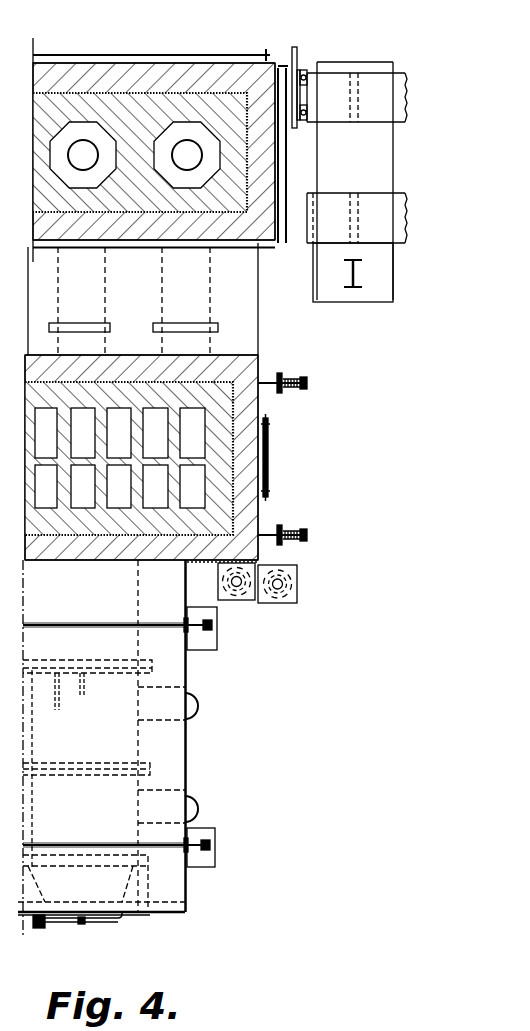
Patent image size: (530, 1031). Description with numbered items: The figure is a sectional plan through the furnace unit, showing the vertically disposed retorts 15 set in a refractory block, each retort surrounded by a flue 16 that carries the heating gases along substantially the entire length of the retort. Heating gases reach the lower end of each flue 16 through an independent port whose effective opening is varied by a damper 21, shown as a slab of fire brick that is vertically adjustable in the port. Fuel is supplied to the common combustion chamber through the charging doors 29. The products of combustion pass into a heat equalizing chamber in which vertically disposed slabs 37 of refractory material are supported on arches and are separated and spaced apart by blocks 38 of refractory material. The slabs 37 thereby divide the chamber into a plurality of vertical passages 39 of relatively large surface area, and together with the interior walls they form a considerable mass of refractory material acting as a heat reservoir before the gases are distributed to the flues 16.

The retort 15 is at (185, 138).
The flue 16 is at (90, 128).
The damper 21 is at (180, 322).
The charging door 29 is at (75, 918).
The slab 37 is at (138, 441).
The block 38 is at (85, 462).
The vertical passage 39 is at (200, 437).